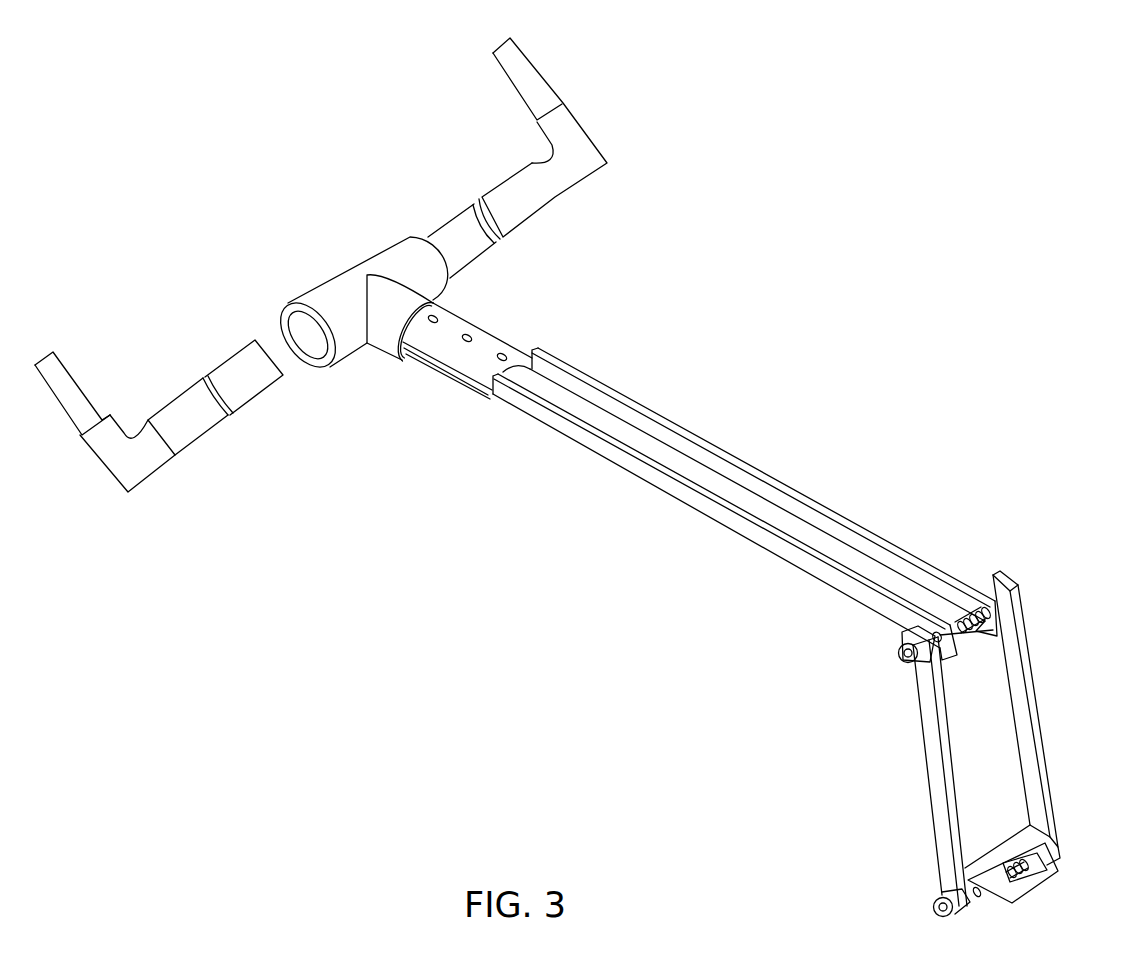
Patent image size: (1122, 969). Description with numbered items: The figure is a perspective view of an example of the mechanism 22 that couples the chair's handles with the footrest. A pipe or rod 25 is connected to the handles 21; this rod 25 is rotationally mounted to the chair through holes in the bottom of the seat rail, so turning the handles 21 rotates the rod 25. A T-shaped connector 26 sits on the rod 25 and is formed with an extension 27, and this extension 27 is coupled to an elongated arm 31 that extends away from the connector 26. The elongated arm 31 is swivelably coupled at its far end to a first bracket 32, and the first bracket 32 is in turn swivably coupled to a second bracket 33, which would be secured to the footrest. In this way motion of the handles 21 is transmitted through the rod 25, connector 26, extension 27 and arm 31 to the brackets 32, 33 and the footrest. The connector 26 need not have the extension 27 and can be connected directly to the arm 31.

The handles 21 is at (530, 76).
The mechanism 22 is at (746, 403).
The pipe or rod 25 is at (450, 231).
The T-shaped connector 26 is at (332, 292).
The extension 27 is at (483, 340).
The elongated arm 31 is at (817, 512).
The first bracket 32 is at (1030, 724).
The bracket 33 is at (1030, 882).